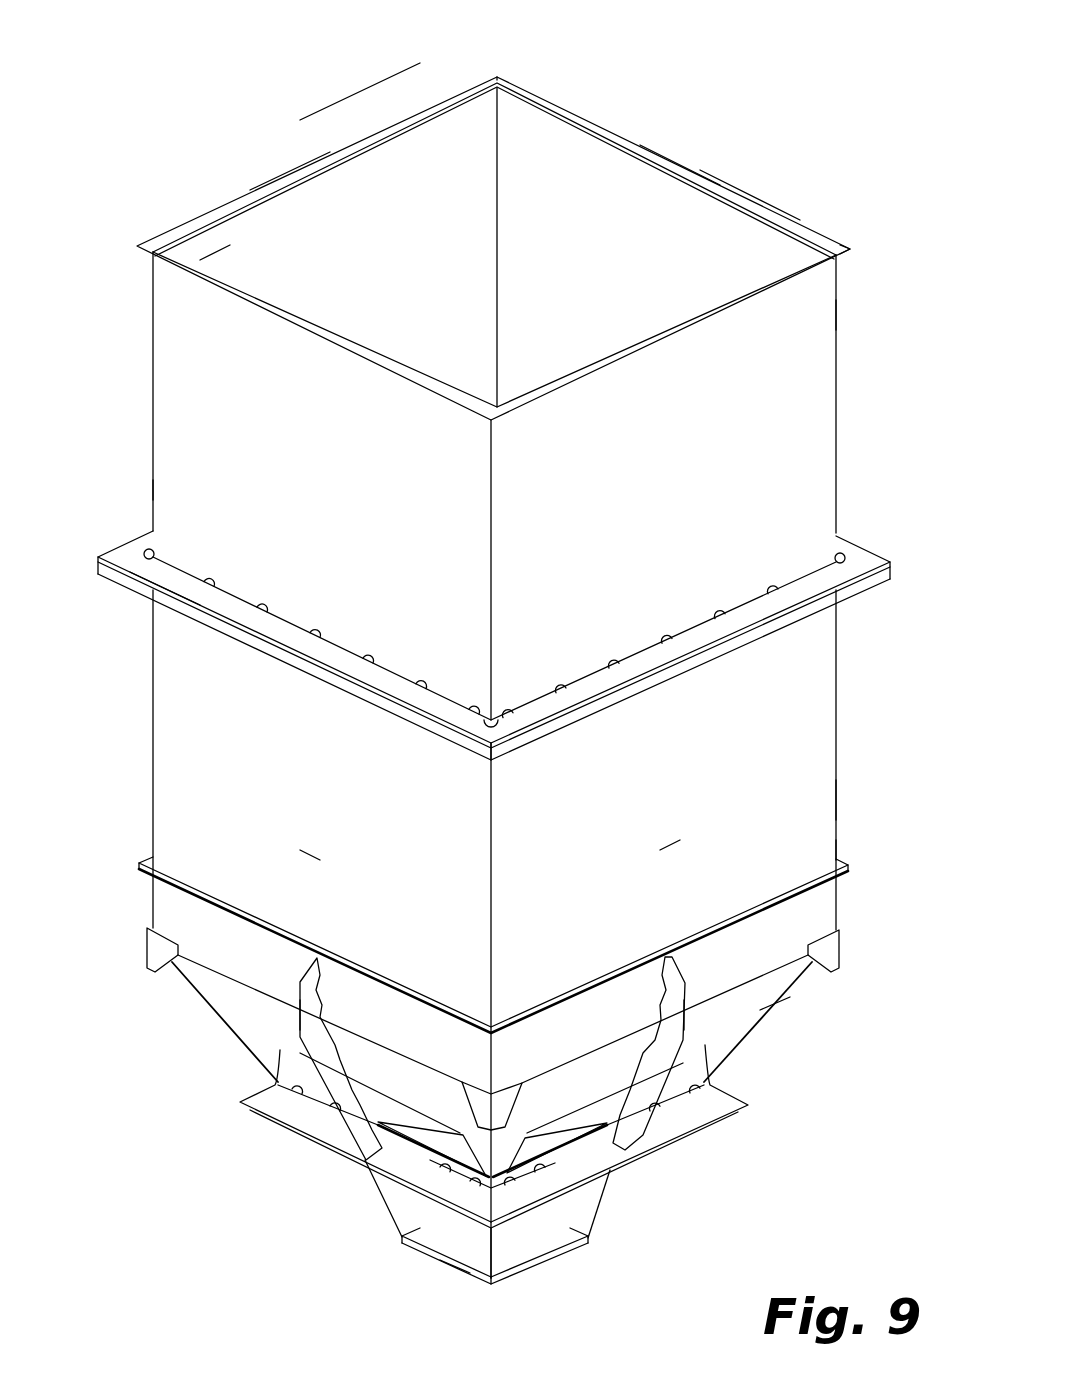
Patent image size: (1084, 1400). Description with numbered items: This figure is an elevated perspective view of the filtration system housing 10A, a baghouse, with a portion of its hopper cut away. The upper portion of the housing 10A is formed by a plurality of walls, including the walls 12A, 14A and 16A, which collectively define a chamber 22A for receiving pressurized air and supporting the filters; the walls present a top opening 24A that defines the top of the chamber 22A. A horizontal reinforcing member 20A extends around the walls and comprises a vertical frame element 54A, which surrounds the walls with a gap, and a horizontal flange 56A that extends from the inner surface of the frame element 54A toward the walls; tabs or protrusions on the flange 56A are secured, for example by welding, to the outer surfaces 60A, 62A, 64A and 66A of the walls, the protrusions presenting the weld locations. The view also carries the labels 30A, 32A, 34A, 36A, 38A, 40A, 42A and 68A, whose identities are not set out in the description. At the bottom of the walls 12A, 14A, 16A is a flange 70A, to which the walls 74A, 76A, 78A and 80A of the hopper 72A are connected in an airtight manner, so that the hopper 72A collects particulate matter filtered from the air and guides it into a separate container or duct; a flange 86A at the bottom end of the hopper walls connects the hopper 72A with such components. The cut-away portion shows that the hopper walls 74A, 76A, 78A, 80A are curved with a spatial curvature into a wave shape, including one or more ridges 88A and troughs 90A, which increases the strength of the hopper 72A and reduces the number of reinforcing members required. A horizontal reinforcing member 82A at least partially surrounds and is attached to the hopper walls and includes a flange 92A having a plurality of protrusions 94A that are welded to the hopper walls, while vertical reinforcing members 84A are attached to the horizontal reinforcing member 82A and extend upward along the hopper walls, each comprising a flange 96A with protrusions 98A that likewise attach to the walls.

The filtration system housing 10A is at (697, 84).
The wall 12A is at (818, 296).
The wall 14A is at (160, 500).
The wall 16A is at (215, 240).
The horizontal reinforcing member 20A is at (893, 577).
The chamber 22A is at (455, 175).
The top opening 24A is at (860, 258).
The flange top surface 30A is at (180, 580).
The top rim edge 32A is at (283, 173).
The top rim edge 34A is at (680, 160).
The lower wall 36A is at (808, 855).
The lower flange 38A is at (183, 880).
The lower housing section 40A is at (147, 815).
The lower side wall 42A is at (841, 801).
The vertical frame element 54A is at (795, 610).
The horizontal flange 56A is at (855, 553).
The outer surface of wall 60A is at (681, 807).
The outer surface of wall 62A is at (339, 813).
The outer surface of wall 64A is at (147, 413).
The outer surface of wall 66A is at (522, 95).
The rim lip 68A is at (340, 148).
The flange 70A is at (800, 905).
The hopper 72A is at (247, 1150).
The hopper wall 74A is at (707, 1040).
The hopper wall 76A is at (370, 1140).
The hopper wall 78A is at (195, 1002).
The hopper wall 80A is at (785, 1023).
The horizontal reinforcing member 82A is at (610, 1175).
The vertical reinforcing member 84A is at (298, 1032).
The flange 86A is at (572, 1250).
The ridge 88A is at (570, 1115).
The trough 90A is at (620, 1083).
The flange 92A is at (463, 1197).
The protrusions 94A is at (433, 1163).
The flange 96A is at (313, 995).
The protrusions 98A is at (372, 1107).